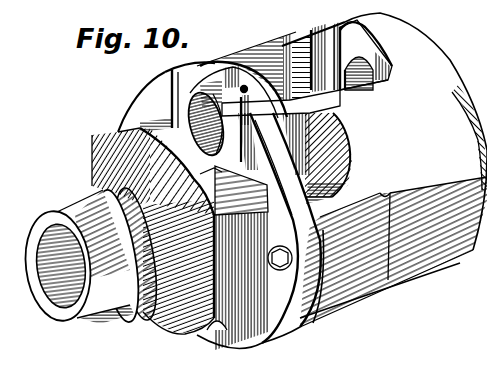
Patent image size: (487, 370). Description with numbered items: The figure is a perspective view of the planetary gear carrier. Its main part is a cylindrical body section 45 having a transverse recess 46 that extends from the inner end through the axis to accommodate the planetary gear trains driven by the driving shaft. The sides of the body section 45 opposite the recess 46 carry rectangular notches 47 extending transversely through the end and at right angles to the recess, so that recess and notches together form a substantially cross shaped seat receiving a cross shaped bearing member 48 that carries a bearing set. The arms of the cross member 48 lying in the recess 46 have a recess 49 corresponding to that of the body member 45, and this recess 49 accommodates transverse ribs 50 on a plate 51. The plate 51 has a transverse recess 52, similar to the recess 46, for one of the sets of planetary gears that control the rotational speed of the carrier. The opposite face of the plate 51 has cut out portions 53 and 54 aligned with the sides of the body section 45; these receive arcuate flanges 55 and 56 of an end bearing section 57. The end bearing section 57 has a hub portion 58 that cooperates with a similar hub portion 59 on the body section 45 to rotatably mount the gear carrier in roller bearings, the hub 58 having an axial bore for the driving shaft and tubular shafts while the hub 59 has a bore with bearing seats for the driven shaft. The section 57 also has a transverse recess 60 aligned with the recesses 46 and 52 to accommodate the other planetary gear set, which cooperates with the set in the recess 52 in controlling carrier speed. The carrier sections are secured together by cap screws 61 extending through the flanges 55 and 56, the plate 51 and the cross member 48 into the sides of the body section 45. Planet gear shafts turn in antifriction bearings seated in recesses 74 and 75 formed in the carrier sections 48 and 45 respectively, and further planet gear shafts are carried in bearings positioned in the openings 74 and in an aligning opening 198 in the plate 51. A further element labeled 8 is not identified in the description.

The cylindrical casing 8 is at (377, 26).
The cylindrical body section 45 is at (408, 42).
The transverse recess 46 is at (322, 26).
The rectangular notches 47 is at (396, 188).
The cross shaped bearing member 48 is at (273, 56).
The recess 49 is at (226, 70).
The transverse ribs 50 is at (284, 108).
The plate 51 is at (342, 171).
The transverse recess 52 is at (214, 64).
The cut out portion 53 is at (165, 72).
The cut out portion 54 is at (256, 142).
The arcuate flange 55 is at (135, 98).
The arcuate flange 56 is at (263, 342).
The end bearing section 57 is at (102, 158).
The hub portion 58 is at (82, 314).
The hub portion 59 is at (470, 88).
The transverse recess 60 is at (204, 190).
The cap screws 61 is at (290, 222).
The recesses 74 is at (243, 85).
The recesses 75 is at (340, 29).
The aligning opening 198 is at (200, 172).